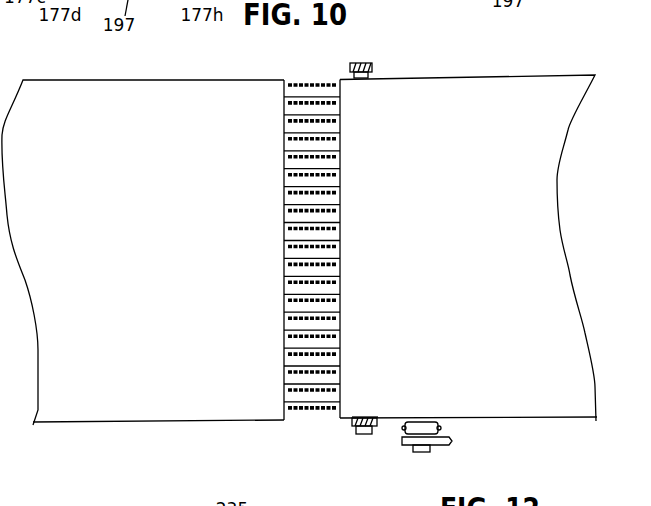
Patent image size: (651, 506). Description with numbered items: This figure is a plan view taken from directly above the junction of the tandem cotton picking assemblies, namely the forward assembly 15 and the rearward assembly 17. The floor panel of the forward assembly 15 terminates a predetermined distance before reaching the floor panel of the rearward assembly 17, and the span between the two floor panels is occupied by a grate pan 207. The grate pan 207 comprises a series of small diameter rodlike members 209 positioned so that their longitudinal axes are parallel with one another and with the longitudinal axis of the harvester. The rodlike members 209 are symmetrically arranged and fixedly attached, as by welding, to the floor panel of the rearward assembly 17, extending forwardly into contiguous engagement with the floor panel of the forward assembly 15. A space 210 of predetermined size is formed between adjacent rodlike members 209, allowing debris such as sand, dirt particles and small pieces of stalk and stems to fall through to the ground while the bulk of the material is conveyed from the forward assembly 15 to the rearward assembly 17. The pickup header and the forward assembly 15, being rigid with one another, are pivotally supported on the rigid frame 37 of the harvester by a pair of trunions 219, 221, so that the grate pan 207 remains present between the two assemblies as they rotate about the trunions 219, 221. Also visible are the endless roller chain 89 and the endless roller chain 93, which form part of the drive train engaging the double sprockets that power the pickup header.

The forward assembly 15 is at (513, 167).
The rearward assembly 17 is at (122, 221).
The rigid frame 37 is at (372, 68).
The endless roller chain 89 is at (402, 428).
The endless roller chain 93 is at (402, 440).
The grate pan 207 is at (233, 292).
The rodlike members 209 is at (287, 124).
The space 210 is at (292, 91).
The trunion 219 is at (367, 417).
The trunion 221 is at (352, 65).